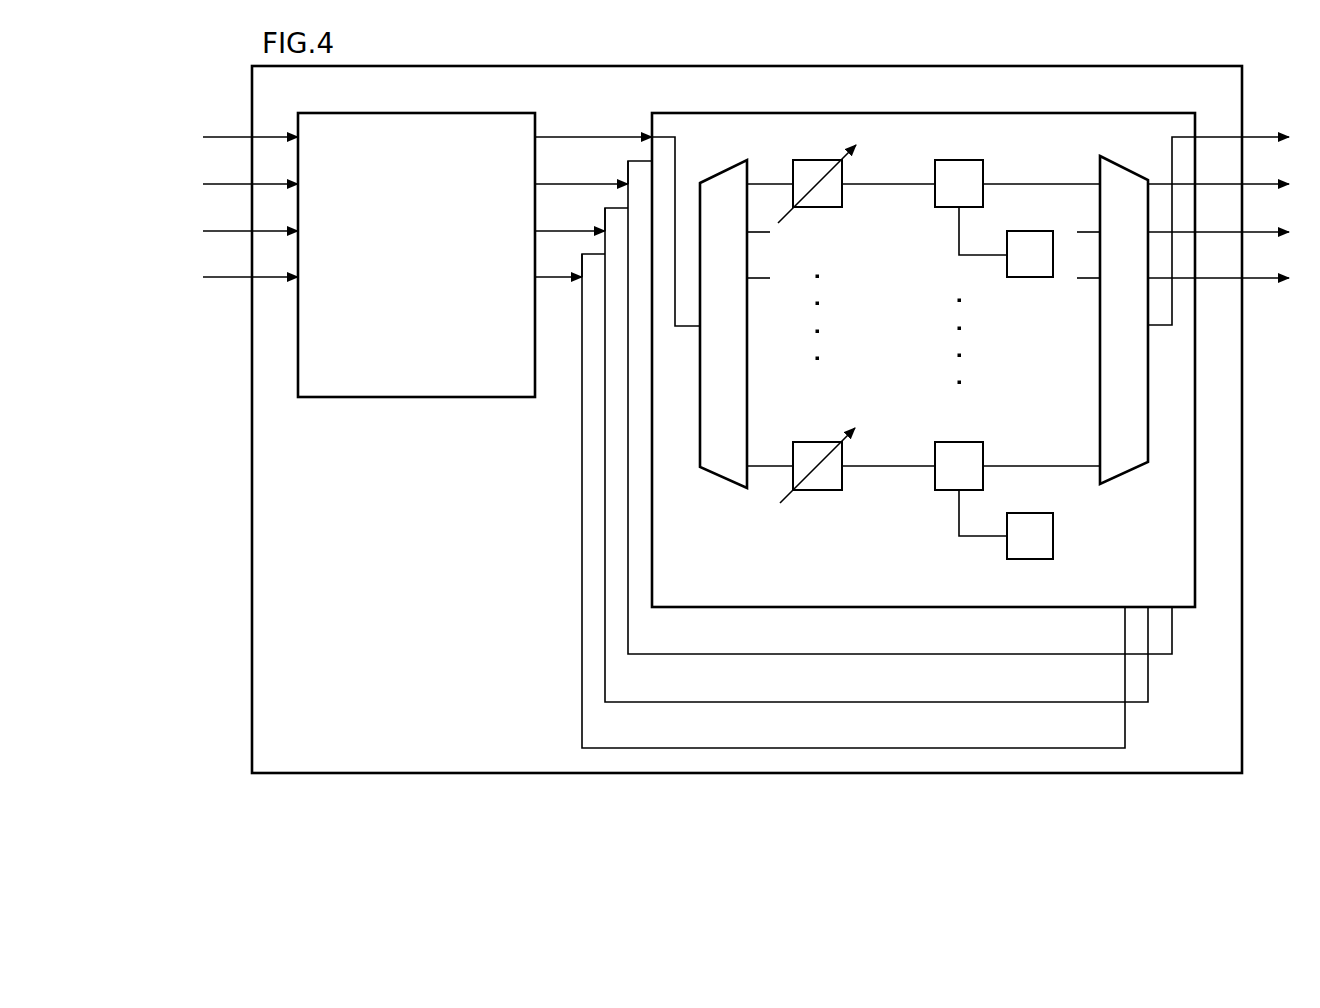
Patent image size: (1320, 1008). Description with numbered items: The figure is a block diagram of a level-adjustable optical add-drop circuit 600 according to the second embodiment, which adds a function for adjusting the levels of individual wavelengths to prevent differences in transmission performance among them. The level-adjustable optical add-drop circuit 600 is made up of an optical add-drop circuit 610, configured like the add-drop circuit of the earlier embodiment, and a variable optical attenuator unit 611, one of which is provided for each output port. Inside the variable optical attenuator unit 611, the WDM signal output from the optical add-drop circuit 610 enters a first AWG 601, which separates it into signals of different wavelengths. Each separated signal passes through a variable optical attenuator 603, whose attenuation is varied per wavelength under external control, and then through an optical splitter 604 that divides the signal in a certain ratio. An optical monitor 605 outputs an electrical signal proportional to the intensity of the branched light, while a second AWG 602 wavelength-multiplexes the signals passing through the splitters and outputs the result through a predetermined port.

The level-adjustable optical add-drop circuit 600 is at (346, 773).
The optical add-drop circuit 610 is at (438, 111).
The variable optical attenuator unit 611 is at (1101, 113).
The AWG (arrayed waveguide grating) 601 is at (737, 487).
The AWG (arrayed waveguide grating) 602 is at (1112, 480).
The variable optical attenuator 603 is at (827, 491).
The optical splitter 604 is at (967, 438).
The optical monitor 605 is at (1040, 561).